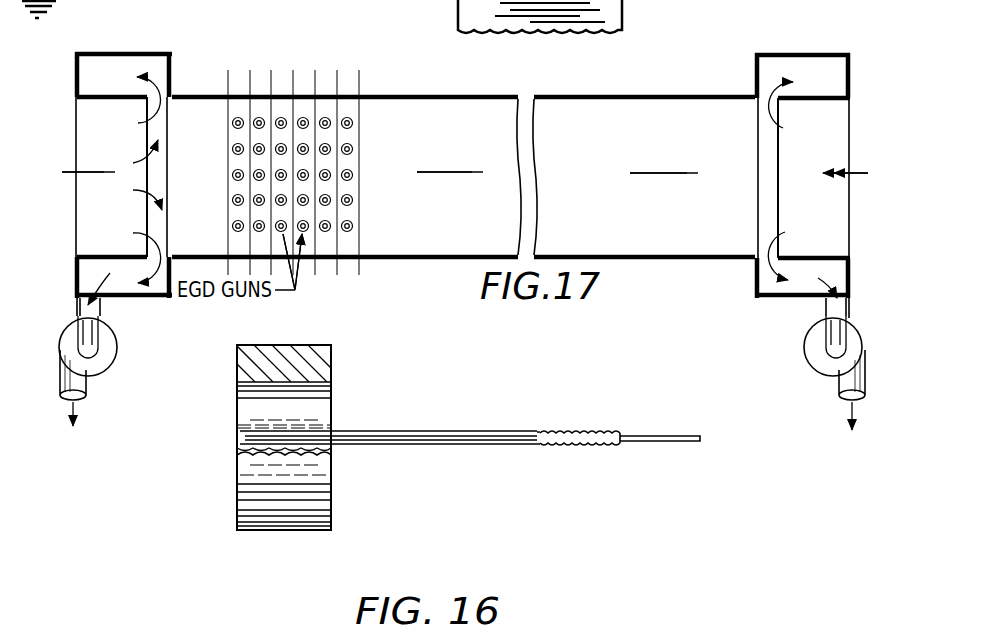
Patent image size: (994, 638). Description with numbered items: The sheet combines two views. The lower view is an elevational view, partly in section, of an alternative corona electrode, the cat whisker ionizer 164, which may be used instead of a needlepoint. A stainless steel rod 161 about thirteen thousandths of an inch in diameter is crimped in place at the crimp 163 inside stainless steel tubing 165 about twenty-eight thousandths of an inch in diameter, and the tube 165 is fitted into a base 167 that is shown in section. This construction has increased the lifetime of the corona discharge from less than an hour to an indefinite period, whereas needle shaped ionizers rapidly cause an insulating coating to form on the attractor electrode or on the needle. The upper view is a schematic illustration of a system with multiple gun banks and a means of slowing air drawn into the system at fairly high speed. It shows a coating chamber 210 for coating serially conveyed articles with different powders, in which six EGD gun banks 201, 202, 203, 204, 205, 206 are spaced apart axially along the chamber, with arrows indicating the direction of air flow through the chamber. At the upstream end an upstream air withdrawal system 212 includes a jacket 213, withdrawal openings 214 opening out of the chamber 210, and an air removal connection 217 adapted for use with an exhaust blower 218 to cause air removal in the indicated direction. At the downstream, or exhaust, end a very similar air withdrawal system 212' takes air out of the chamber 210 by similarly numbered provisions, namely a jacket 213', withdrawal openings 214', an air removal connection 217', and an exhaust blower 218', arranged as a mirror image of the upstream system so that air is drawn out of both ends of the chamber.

In FIG. 16, the stainless steel rod 161 is at (664, 432).
In FIG. 16, the crimp 163 is at (575, 430).
In FIG. 16, the cat whisker ionizer 164 is at (452, 386).
In FIG. 16, the stainless steel tubing 165 is at (440, 446).
In FIG. 16, the base 167 is at (308, 345).
In FIG. 17, the EGD gun bank 201 is at (233, 72).
In FIG. 17, the EGD gun bank 202 is at (260, 73).
In FIG. 17, the EGD gun bank 203 is at (280, 72).
In FIG. 17, the EGD gun bank 204 is at (303, 78).
In FIG. 17, the EGD gun bank 205 is at (325, 77).
In FIG. 17, the EGD gun bank 206 is at (350, 75).
In FIG. 17, the coating chamber 210 is at (645, 86).
In FIG. 17, the upstream air withdrawal system 212 is at (138, 209).
In FIG. 17, the jacket 213 is at (143, 143).
In FIG. 17, the withdrawal openings 214 is at (175, 177).
In FIG. 17, the air removal connection 217 is at (69, 288).
In FIG. 17, the exhaust blower 218 is at (107, 371).
In FIG. 17, the downstream air withdrawal system 212' is at (775, 204).
In FIG. 17, the jacket 213' is at (738, 186).
In FIG. 17, the withdrawal openings 214' is at (739, 178).
In FIG. 17, the air removal connection 217' is at (859, 294).
In FIG. 17, the exhaust blower 218' is at (822, 373).